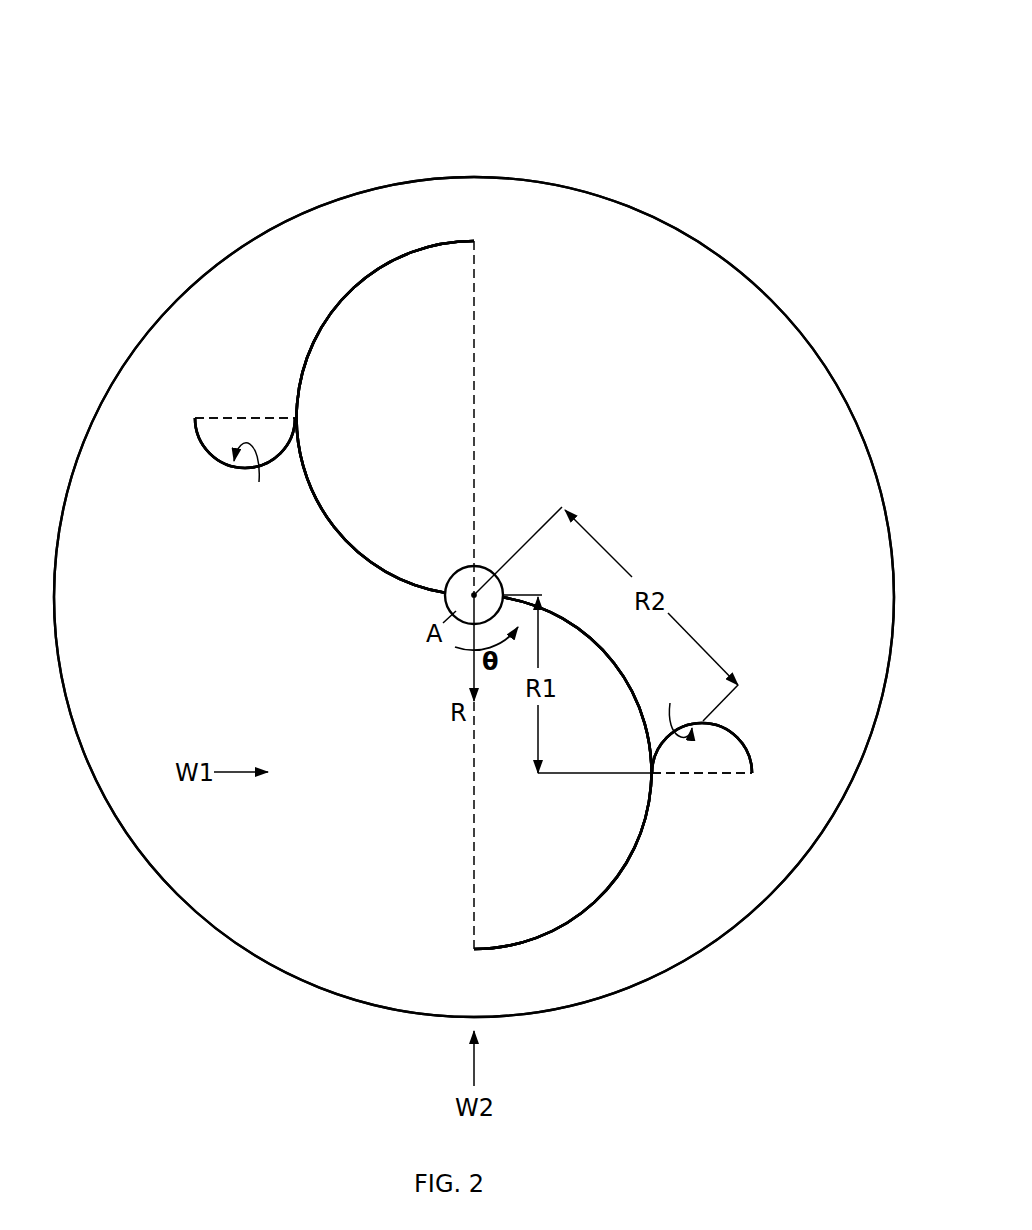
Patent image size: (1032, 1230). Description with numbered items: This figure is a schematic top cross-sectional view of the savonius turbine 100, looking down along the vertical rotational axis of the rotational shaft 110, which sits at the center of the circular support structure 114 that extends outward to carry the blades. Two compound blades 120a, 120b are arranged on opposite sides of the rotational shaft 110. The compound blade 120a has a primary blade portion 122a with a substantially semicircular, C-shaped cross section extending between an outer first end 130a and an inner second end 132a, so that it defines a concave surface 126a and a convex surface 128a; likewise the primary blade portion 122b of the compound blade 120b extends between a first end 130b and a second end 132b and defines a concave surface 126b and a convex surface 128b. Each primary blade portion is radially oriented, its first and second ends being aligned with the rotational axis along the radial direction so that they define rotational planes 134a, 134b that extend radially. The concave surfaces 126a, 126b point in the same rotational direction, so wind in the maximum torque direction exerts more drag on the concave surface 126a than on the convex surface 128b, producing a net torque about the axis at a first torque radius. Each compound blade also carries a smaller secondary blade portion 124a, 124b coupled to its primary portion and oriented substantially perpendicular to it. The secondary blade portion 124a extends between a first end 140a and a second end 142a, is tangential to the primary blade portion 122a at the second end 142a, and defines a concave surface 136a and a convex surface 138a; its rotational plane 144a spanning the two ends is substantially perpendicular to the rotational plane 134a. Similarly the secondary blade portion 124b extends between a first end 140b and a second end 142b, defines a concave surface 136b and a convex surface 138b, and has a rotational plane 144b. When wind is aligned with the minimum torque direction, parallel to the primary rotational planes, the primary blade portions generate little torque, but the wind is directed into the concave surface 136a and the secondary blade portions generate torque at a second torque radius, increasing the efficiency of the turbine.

The savonius turbine 100 is at (741, 121).
The rotational shaft 110 is at (446, 606).
The support structure 114 is at (800, 334).
The compound blade 120a is at (576, 916).
The compound blade 120b is at (382, 571).
The primary blade portion 122a is at (640, 712).
The primary blade portion 122b is at (336, 530).
The secondary blade portion 124a is at (749, 754).
The secondary blade portion 124b is at (208, 453).
The concave surface 126a is at (530, 917).
The concave surface 126b is at (338, 305).
The convex surface 128a is at (553, 943).
The convex surface 128b is at (300, 357).
The first end 130a is at (473, 950).
The first end 130b is at (476, 241).
The second end 132a is at (528, 582).
The second end 132b is at (445, 588).
The rotational plane 134a is at (473, 798).
The rotational plane 134b is at (476, 365).
The concave surface 136a is at (681, 706).
The concave surface 136b is at (262, 476).
The convex surface 138a is at (738, 729).
The convex surface 138b is at (209, 457).
The first end 140a is at (752, 775).
The first end 140b is at (196, 417).
The second end 142a is at (652, 780).
The second end 142b is at (296, 418).
The rotational plane 144a is at (668, 775).
The rotational plane 144b is at (270, 416).